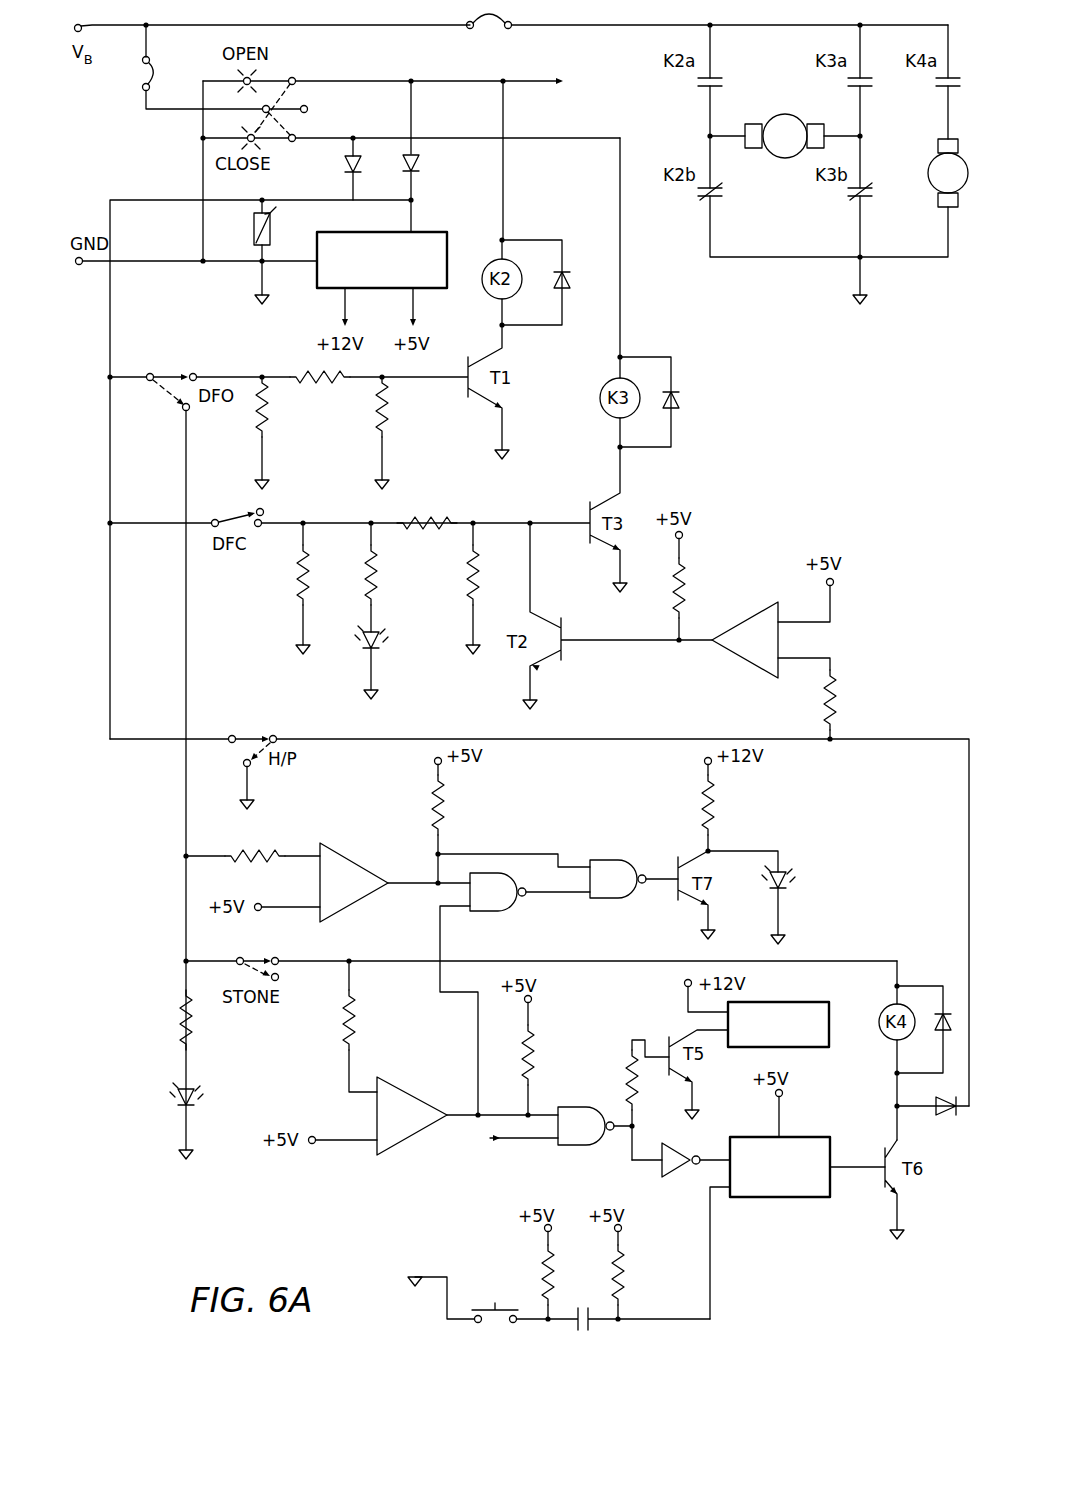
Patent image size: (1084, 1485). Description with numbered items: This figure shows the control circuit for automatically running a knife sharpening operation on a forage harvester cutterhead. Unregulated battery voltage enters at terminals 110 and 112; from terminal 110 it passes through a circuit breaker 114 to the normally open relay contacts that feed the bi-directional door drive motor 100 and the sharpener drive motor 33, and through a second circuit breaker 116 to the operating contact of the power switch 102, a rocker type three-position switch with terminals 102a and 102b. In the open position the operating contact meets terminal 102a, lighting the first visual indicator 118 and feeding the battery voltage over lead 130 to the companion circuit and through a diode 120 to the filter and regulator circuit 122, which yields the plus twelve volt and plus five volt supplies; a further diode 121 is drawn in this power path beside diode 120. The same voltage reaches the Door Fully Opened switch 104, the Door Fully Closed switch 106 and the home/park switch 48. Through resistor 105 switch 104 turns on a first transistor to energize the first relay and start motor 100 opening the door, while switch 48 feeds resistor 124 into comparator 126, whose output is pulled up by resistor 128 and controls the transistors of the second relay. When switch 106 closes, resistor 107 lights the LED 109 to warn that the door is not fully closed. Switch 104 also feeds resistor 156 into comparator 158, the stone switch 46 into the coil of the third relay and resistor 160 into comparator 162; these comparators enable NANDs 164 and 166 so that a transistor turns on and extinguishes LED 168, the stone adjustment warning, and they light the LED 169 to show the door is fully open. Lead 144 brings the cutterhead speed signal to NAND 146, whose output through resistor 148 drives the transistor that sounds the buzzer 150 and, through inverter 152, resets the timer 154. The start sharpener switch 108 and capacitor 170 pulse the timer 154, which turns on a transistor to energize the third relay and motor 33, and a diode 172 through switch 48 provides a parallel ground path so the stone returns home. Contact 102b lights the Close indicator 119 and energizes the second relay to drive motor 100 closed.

The terminal 110 is at (85, 33).
The terminal 112 is at (82, 266).
The circuit breaker 114 is at (481, 25).
The second circuit breaker 116 is at (146, 69).
The first visual indicator 118 is at (239, 80).
The Close indicator 119 is at (243, 136).
The power switch 102 is at (307, 107).
The terminal 102a is at (290, 78).
The terminal 102b is at (295, 138).
The diode 120 is at (419, 163).
The diode 121 is at (348, 165).
The filter and regulator circuit 122 is at (420, 231).
The lead 130 is at (527, 81).
The bi-directional door drive motor 100 is at (785, 114).
The sharpener drive motor 33 is at (929, 165).
The Door Fully Opened switch 104 is at (160, 375).
The resistor 105 is at (309, 368).
The Door Fully Closed switch 106 is at (220, 517).
The resistor 107 is at (376, 587).
The LED 109 is at (349, 646).
The home/park switch 48 is at (251, 735).
The resistor 124 is at (838, 702).
The comparator 126 is at (736, 667).
The resistor 128 is at (678, 598).
The resistor 156 is at (247, 855).
The comparator 158 is at (361, 858).
The NAND 164 is at (501, 914).
The NAND 166 is at (602, 860).
The LED 168 is at (802, 870).
The stone switch 46 is at (255, 960).
The resistor 160 is at (353, 1027).
The comparator 162 is at (421, 1082).
The NAND 146 is at (576, 1106).
The lead 144 is at (531, 1143).
The resistor 148 is at (636, 1091).
The buzzer 150 is at (802, 1002).
The inverter 152 is at (682, 1175).
The timer 154 is at (795, 1134).
The diode 172 is at (939, 1124).
The LED 169 is at (205, 1100).
The start sharpener switch 108 is at (485, 1306).
The capacitor 170 is at (585, 1306).